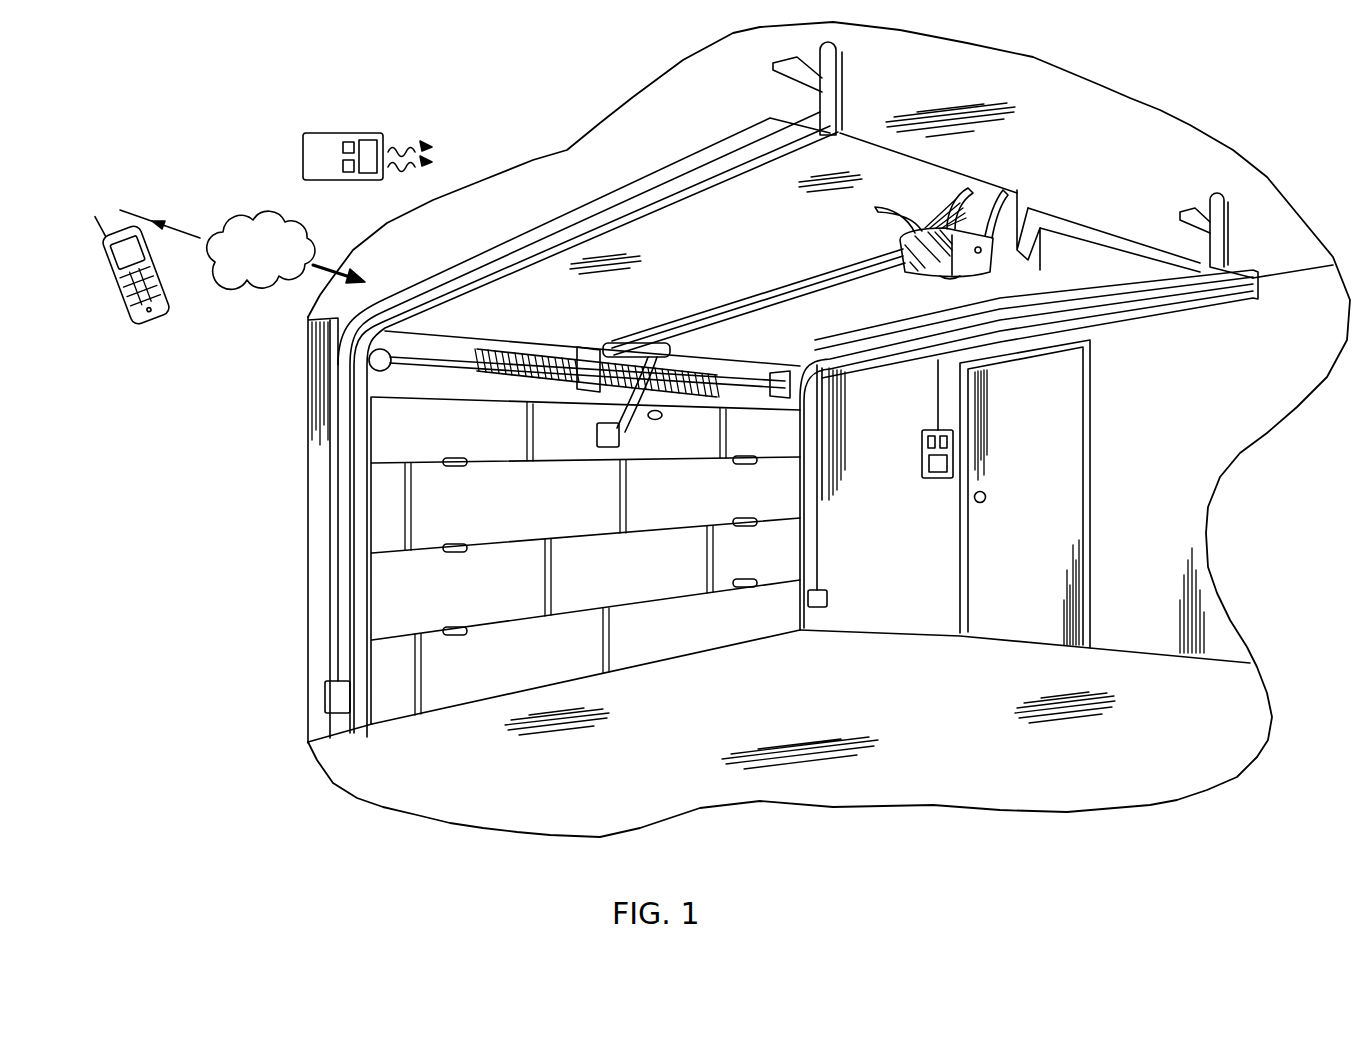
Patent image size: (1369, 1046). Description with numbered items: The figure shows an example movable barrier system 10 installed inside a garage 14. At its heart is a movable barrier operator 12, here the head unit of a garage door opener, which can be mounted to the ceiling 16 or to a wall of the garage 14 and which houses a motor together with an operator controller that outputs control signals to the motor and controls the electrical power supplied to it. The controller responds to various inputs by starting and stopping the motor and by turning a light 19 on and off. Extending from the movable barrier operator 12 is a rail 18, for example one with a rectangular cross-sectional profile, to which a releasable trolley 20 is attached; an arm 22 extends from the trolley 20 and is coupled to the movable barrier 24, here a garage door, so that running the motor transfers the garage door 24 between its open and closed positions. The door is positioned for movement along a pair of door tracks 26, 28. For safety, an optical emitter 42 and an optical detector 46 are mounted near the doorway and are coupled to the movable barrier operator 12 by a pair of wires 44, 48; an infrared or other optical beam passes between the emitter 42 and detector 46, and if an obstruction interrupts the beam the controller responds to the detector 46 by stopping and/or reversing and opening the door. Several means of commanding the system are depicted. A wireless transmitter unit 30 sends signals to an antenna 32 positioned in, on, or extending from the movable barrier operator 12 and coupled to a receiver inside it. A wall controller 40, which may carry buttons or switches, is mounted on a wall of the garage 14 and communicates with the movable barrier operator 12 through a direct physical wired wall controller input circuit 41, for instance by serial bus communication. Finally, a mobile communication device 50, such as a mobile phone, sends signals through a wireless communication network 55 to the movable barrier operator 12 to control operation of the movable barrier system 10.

The movable barrier system 10 is at (790, 258).
The movable barrier operator 12 is at (905, 242).
The garage 14 is at (322, 460).
The ceiling 16 is at (923, 47).
The rail 18 is at (735, 312).
The light 19 is at (952, 277).
The releasable trolley 20 is at (705, 350).
The arm 22 is at (640, 432).
The movable barrier 24 is at (707, 633).
The door track 26 is at (1200, 255).
The door track 28 is at (820, 122).
The wireless transmitter unit 30 is at (345, 132).
The antenna 32 is at (978, 280).
The wall controller 40 is at (930, 428).
The wired wall controller input circuit 41 is at (1150, 318).
The optical emitter 42 is at (818, 600).
The wire 44 is at (1057, 228).
The optical detector 46 is at (345, 710).
The wire 48 is at (340, 583).
The mobile communication device 50 is at (106, 262).
The wireless communication network 55 is at (275, 268).